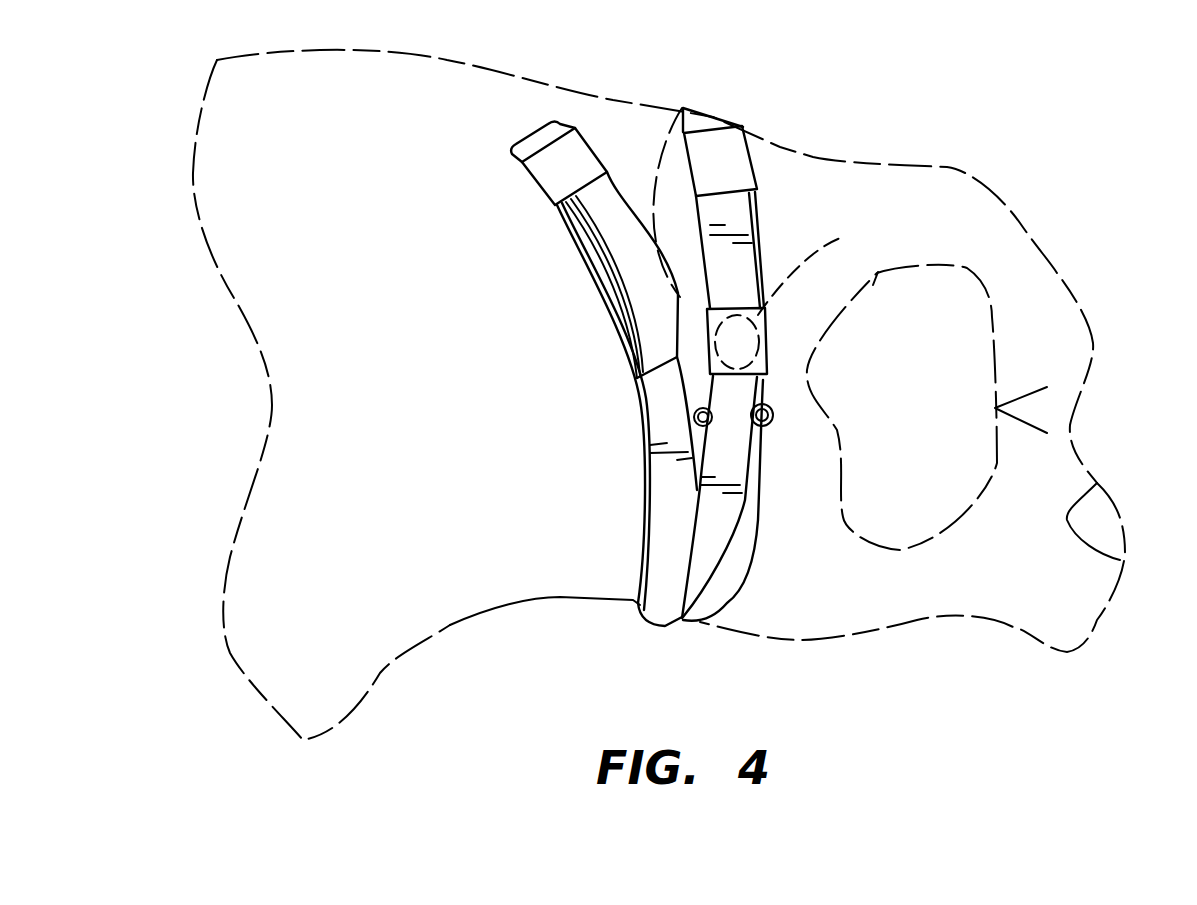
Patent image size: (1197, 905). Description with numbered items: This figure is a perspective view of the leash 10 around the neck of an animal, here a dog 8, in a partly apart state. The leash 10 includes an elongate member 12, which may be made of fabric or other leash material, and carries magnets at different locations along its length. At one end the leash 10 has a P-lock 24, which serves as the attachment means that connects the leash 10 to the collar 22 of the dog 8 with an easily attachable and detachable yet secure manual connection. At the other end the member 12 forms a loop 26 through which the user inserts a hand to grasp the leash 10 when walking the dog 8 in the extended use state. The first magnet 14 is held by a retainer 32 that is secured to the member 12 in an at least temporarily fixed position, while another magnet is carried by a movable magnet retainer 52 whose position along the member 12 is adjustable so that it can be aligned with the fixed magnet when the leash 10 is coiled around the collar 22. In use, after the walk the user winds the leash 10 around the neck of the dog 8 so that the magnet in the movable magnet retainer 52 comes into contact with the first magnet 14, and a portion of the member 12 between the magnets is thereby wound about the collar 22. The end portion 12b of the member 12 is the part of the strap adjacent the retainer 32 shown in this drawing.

The dog 8 is at (1057, 273).
The leash 10 is at (640, 620).
The elongate member 12 is at (647, 517).
The strap end connector 12b is at (537, 127).
The first magnet 14 is at (819, 269).
The collar 22 is at (730, 603).
The P-lock 24 is at (775, 420).
The loop 26 is at (617, 193).
The retainer 32 is at (522, 190).
The movable magnet retainer 52 is at (717, 128).